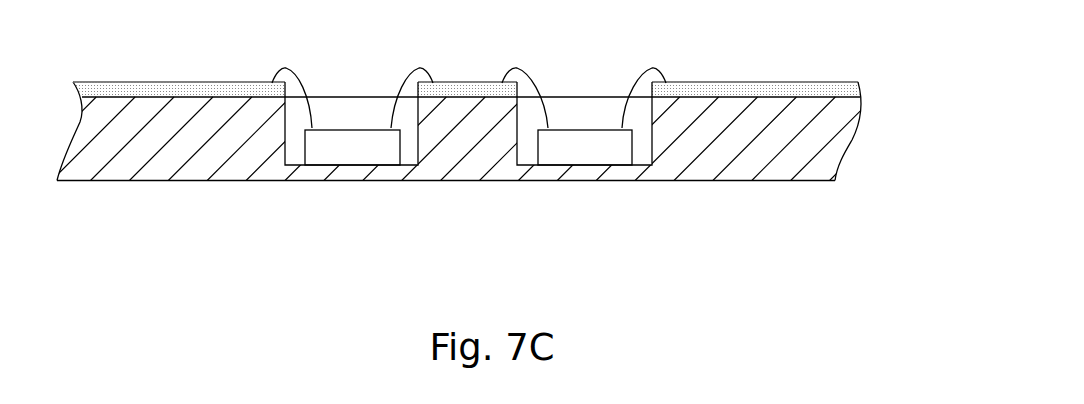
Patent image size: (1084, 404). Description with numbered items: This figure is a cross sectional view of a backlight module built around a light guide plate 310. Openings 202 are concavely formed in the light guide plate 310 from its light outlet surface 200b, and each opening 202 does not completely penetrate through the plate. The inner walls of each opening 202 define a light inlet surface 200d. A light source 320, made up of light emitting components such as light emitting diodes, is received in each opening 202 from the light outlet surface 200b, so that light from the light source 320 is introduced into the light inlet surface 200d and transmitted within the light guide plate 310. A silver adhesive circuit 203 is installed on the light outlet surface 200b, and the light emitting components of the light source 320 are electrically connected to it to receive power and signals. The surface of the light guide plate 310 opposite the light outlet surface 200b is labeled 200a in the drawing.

The silver adhesive circuit 203 is at (167, 91).
The opening 202 is at (340, 117).
The light source 320 is at (583, 147).
The light outlet surface 200b is at (740, 97).
The bottom surface of substrate 200a is at (770, 181).
The light inlet surface 200d is at (285, 140).
The light guide plate 310 is at (833, 147).